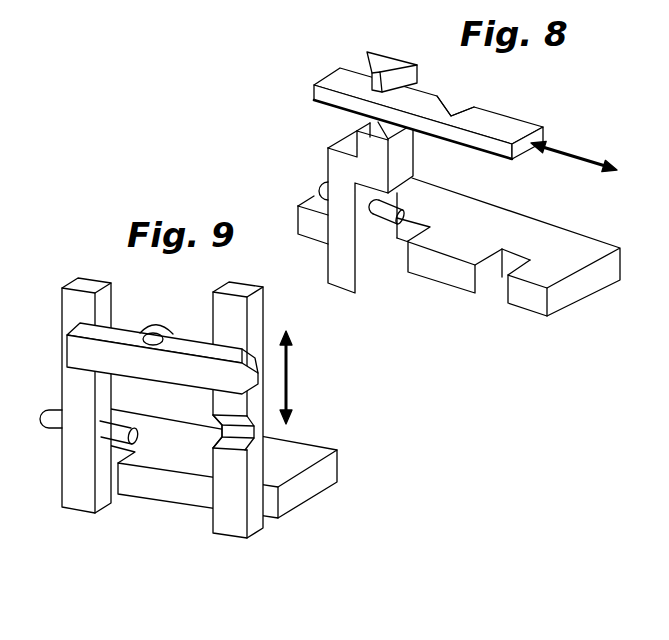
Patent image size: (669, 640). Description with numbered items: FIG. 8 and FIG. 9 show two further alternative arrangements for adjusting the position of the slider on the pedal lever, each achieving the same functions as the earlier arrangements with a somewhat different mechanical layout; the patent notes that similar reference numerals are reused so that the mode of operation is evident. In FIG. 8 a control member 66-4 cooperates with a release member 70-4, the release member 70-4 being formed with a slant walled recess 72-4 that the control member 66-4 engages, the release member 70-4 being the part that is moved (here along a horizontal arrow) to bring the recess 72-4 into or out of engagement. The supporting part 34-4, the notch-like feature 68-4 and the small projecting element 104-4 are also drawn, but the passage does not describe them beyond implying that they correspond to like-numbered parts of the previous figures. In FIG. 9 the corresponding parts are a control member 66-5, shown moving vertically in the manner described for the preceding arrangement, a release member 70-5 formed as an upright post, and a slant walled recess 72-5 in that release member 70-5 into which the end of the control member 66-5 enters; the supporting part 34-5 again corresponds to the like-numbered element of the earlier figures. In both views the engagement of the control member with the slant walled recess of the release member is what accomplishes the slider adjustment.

In FIG. 8, the base plate 34-4 is at (471, 270).
In FIG. 8, the control member 66-4 is at (378, 275).
In FIG. 8, the notch in base plate 68-4 is at (500, 290).
In FIG. 8, the release member 70-4 is at (399, 96).
In FIG. 8, the slant walled recess 72-4 is at (451, 111).
In FIG. 8, the pin 104-4 is at (313, 187).
In FIG. 9, the base plate 34-5 is at (330, 470).
In FIG. 9, the control member 66-5 is at (127, 333).
In FIG. 9, the release member 70-5 is at (224, 451).
In FIG. 9, the slant walled recess 72-5 is at (245, 443).